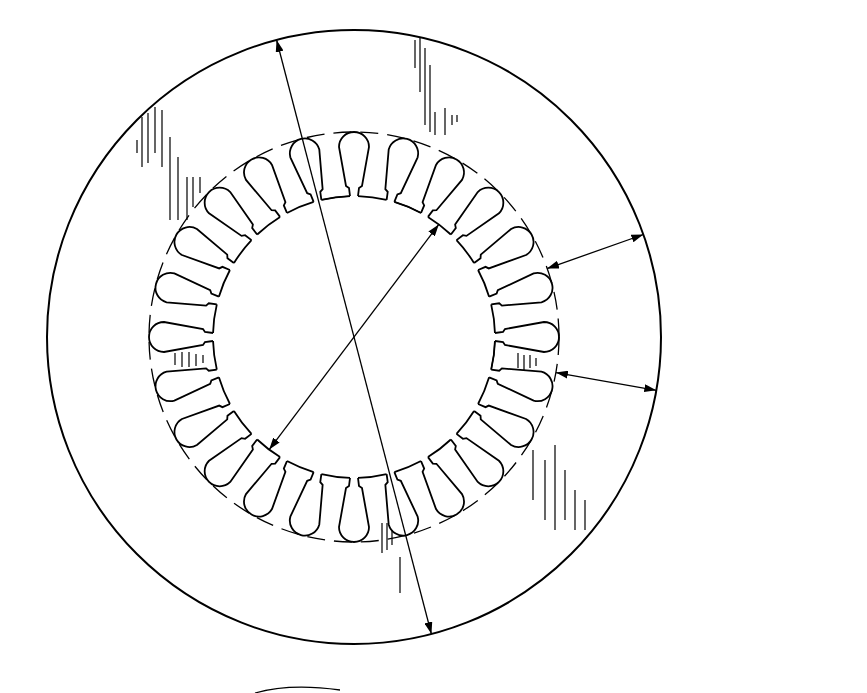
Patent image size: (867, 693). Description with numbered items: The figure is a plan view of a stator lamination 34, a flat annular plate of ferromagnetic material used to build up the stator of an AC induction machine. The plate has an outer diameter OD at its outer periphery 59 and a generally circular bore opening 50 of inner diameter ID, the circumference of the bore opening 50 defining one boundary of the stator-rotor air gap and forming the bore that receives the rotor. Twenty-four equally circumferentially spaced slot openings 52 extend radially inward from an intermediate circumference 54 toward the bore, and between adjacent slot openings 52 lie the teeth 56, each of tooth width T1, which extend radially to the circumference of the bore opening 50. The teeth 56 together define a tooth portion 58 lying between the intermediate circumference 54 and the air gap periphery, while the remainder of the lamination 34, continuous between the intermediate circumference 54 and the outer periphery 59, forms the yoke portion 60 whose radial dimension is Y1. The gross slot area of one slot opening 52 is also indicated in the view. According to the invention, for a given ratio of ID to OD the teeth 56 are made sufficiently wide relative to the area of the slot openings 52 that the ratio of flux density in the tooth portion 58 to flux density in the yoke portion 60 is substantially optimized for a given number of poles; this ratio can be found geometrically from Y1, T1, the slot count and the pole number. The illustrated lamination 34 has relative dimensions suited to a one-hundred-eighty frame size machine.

The stator lamination 34 is at (375, 361).
The bore opening 50 is at (495, 362).
The slot openings 52 is at (440, 198).
The intermediate circumference 54 is at (558, 307).
The teeth 56 is at (208, 280).
The tooth portion 58 is at (334, 540).
The outer periphery 59 is at (500, 67).
The yoke portion 60 is at (615, 242).
The tooth width T1 is at (413, 502).
The yoke dimension Y1 is at (600, 381).
The outer diameter OD is at (336, 275).
The inner diameter ID is at (391, 284).